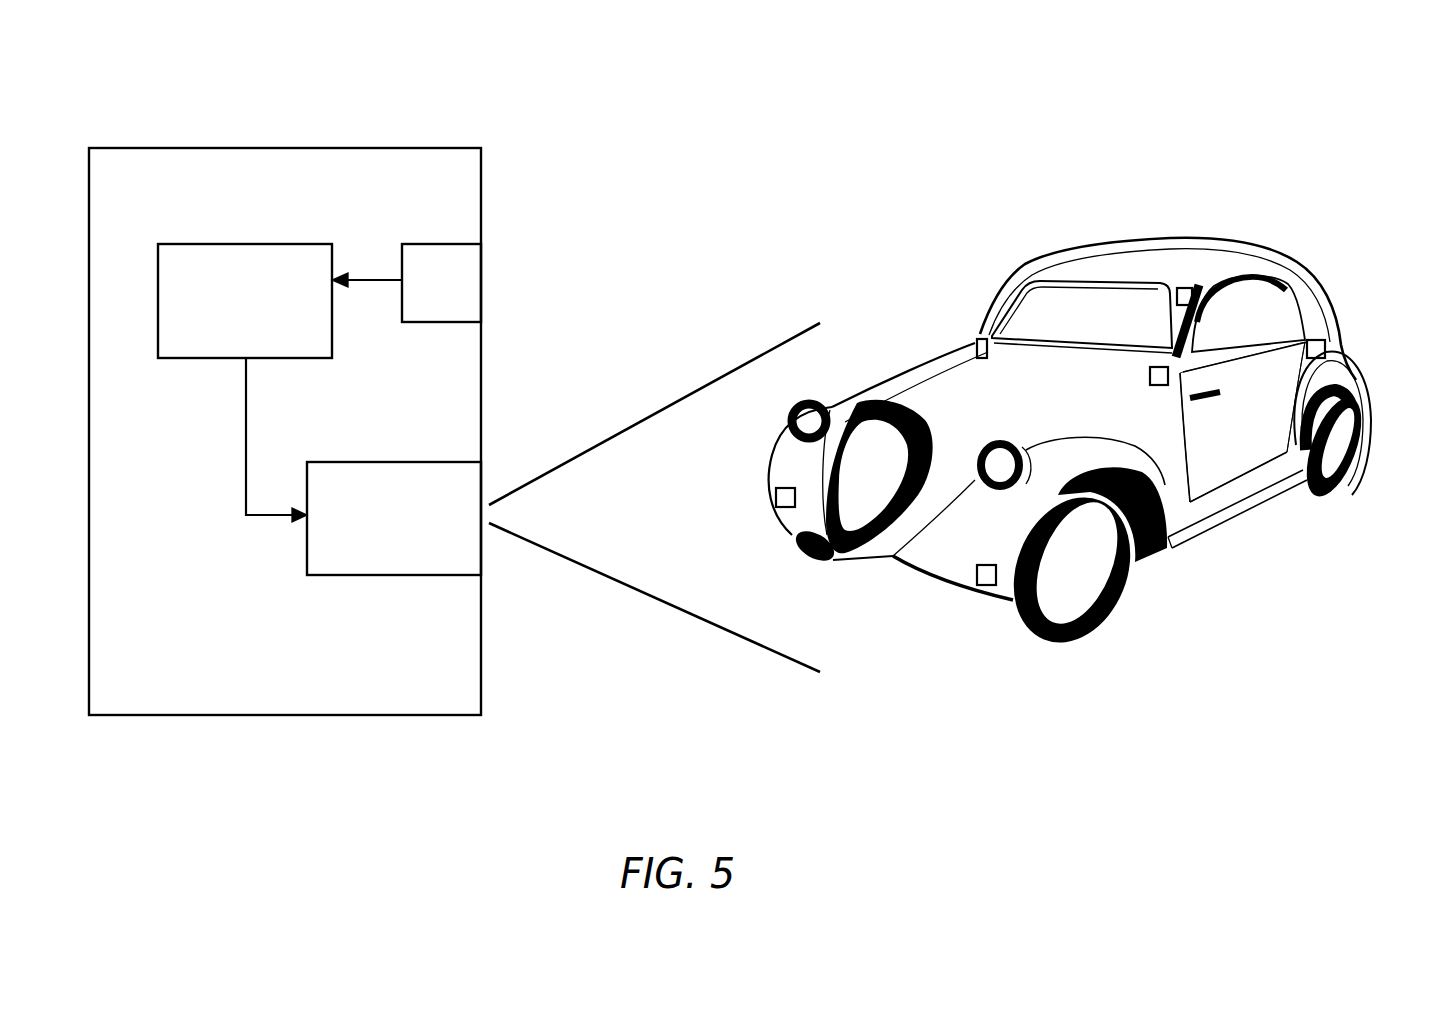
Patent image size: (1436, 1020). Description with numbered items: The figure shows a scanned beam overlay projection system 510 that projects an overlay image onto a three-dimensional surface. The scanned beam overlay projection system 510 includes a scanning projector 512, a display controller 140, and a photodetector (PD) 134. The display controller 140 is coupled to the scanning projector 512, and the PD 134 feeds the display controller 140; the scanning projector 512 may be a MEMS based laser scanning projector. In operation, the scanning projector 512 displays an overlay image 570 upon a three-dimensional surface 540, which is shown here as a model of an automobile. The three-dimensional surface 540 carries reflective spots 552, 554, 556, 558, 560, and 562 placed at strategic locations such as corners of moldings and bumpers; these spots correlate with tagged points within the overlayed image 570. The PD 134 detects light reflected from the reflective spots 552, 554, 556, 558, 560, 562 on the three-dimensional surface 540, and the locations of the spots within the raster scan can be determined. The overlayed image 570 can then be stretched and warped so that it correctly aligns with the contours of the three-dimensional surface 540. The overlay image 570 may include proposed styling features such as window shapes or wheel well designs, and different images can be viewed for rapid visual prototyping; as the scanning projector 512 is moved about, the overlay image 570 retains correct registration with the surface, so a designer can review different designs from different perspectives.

The scanned beam overlay projection system 510 is at (280, 148).
The display controller 140 is at (228, 244).
The photodetector (PD) 134 is at (426, 244).
The scanning projector 512 is at (392, 462).
The three-dimensional (3D) surface 540 is at (1090, 174).
The reflective spot 552 is at (776, 498).
The reflective spot 554 is at (982, 565).
The reflective spot 556 is at (982, 358).
The reflective spot 558 is at (1150, 376).
The reflective spot 560 is at (1184, 288).
The reflective spot 562 is at (1325, 349).
The overlay image 570 is at (1182, 438).